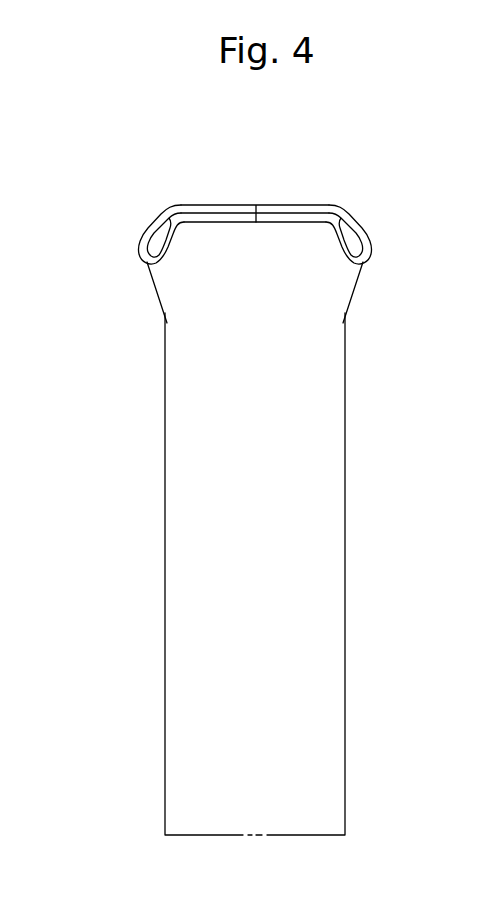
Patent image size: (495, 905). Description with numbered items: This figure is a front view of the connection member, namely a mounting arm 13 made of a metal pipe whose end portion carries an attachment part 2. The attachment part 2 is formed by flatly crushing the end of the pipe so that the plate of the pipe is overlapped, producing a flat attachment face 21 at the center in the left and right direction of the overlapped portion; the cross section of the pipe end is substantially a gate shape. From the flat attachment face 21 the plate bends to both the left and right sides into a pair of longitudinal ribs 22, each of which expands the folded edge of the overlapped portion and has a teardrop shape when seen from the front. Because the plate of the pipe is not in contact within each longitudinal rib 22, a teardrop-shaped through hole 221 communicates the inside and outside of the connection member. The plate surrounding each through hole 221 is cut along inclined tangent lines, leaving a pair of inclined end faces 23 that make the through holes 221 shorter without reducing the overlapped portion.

The attachment part 2 is at (233, 232).
The flat attachment face 21 is at (213, 204).
The through hole 221 is at (155, 243).
The longitudinal rib 22 is at (149, 270).
The inclined end face 23 is at (176, 223).
The mounting arm 13 is at (165, 617).